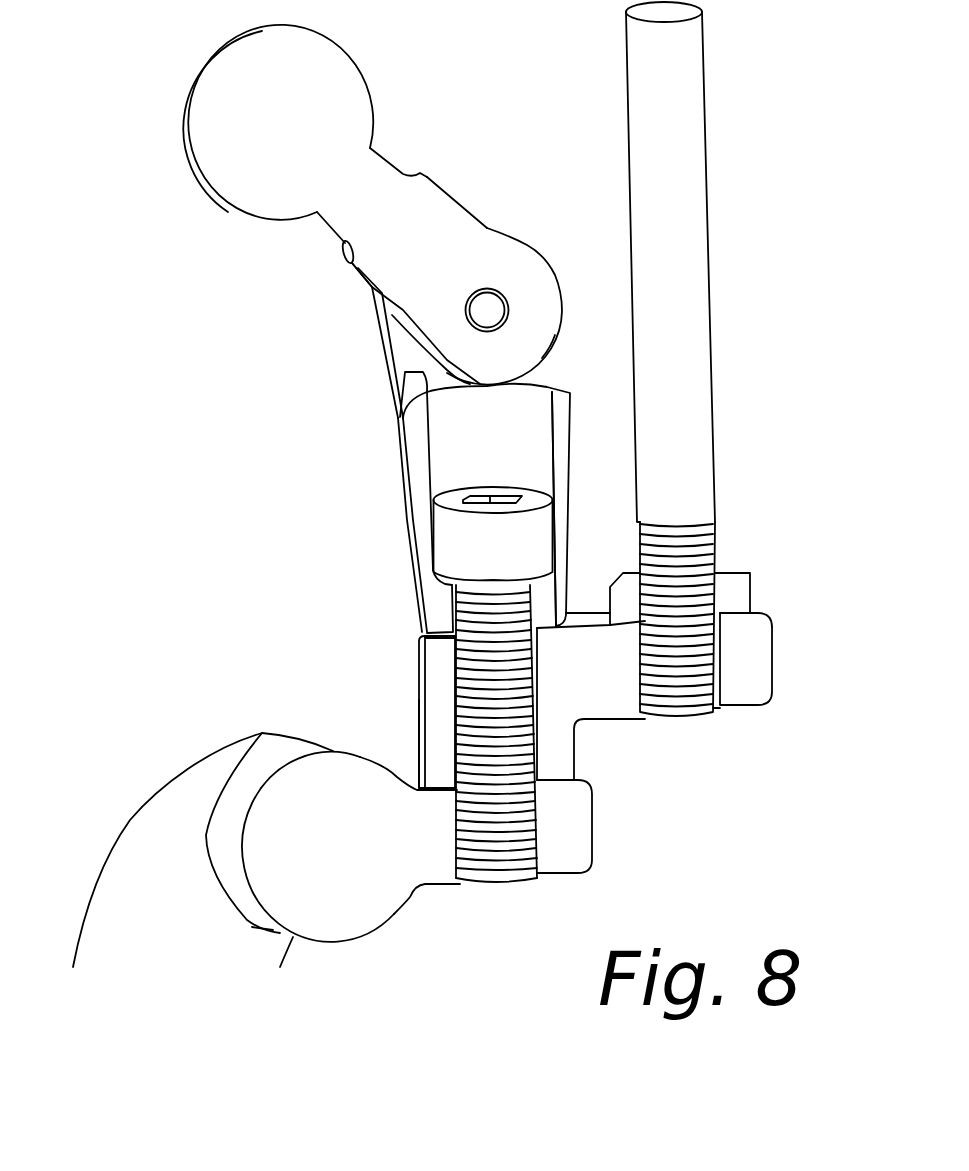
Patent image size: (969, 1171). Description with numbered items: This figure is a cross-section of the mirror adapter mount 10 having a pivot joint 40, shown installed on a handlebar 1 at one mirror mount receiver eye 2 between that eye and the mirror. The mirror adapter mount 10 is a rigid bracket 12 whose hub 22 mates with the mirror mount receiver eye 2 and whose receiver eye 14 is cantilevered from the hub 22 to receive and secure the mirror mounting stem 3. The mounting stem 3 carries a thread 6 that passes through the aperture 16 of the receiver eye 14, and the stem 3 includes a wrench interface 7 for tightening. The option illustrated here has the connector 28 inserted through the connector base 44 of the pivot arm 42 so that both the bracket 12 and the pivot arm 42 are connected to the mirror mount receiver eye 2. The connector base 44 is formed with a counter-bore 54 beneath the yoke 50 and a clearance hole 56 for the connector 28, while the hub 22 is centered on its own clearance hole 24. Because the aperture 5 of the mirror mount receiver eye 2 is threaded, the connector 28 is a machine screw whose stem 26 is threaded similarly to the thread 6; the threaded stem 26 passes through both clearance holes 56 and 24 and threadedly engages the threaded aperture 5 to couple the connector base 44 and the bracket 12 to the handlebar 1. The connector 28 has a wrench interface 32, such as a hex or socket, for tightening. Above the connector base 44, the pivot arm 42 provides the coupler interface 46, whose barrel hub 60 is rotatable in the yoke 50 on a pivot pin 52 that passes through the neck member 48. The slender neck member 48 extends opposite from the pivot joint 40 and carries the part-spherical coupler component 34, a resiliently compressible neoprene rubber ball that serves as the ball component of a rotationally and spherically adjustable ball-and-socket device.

The handlebar 1 is at (175, 772).
The mirror mount receiver eye 2 is at (595, 853).
The mirror mounting stem 3 is at (708, 182).
The aperture 5 is at (537, 818).
The thread 6 is at (688, 712).
The wrench interface 7 is at (752, 590).
The mirror adapter mount 10 is at (246, 418).
The bracket 12 is at (418, 667).
The receiver eye 14 is at (773, 662).
The aperture 16 is at (720, 657).
The hub 22 is at (417, 750).
The clearance hole 24 is at (455, 670).
The stem 26 is at (522, 878).
The connector 28 is at (433, 548).
The wrench interface 32 is at (512, 557).
The part-spherical coupler component 34 is at (207, 58).
The pivot joint 40 is at (545, 257).
The pivot arm 42 is at (407, 498).
The connector base 44 is at (402, 438).
The coupler interface 46 is at (458, 200).
The neck member 48 is at (385, 160).
The yoke 50 is at (385, 353).
The pivot pin 52 is at (507, 302).
The counter-bore 54 is at (427, 455).
The clearance hole 56 is at (450, 592).
The barrel hub 60 is at (553, 342).